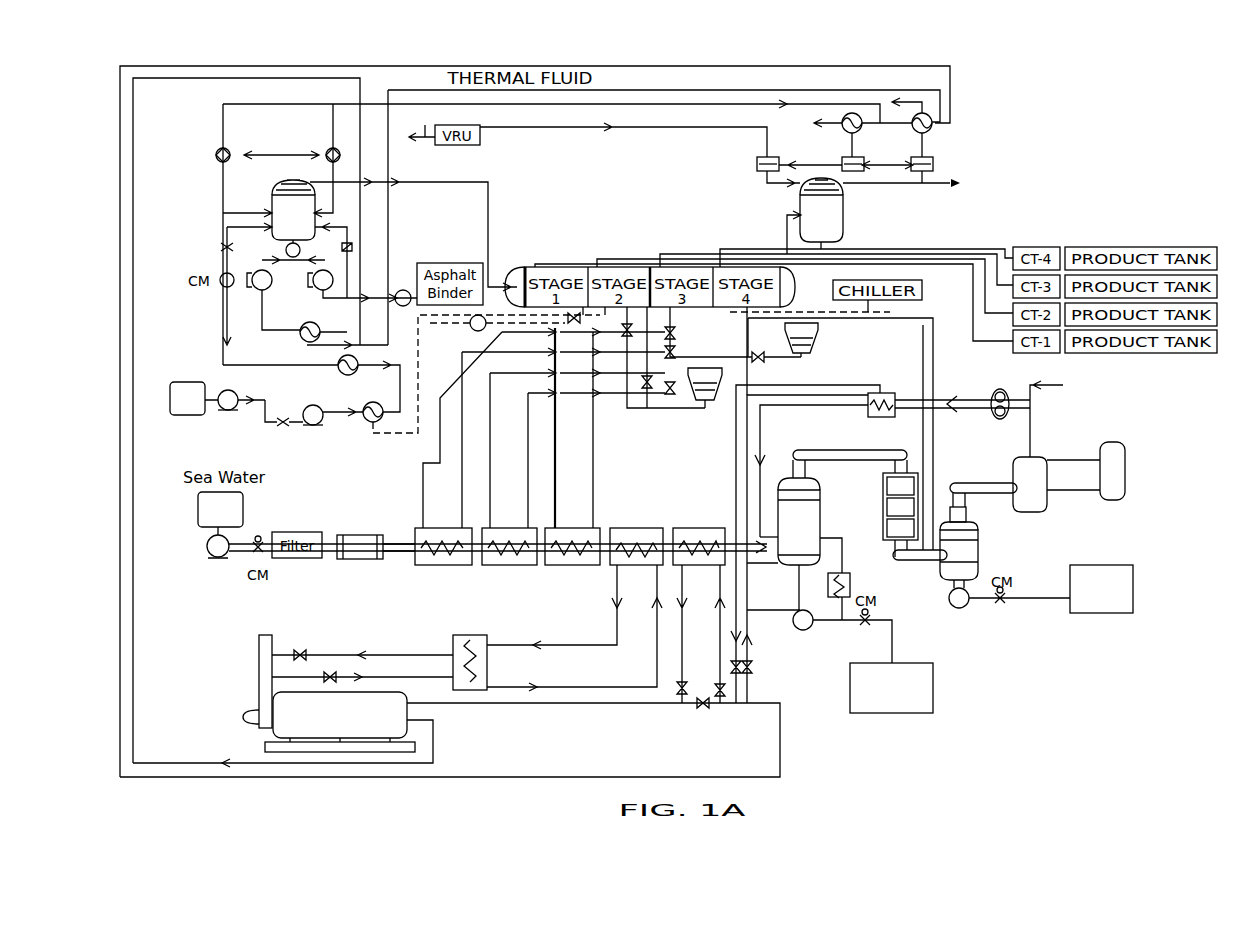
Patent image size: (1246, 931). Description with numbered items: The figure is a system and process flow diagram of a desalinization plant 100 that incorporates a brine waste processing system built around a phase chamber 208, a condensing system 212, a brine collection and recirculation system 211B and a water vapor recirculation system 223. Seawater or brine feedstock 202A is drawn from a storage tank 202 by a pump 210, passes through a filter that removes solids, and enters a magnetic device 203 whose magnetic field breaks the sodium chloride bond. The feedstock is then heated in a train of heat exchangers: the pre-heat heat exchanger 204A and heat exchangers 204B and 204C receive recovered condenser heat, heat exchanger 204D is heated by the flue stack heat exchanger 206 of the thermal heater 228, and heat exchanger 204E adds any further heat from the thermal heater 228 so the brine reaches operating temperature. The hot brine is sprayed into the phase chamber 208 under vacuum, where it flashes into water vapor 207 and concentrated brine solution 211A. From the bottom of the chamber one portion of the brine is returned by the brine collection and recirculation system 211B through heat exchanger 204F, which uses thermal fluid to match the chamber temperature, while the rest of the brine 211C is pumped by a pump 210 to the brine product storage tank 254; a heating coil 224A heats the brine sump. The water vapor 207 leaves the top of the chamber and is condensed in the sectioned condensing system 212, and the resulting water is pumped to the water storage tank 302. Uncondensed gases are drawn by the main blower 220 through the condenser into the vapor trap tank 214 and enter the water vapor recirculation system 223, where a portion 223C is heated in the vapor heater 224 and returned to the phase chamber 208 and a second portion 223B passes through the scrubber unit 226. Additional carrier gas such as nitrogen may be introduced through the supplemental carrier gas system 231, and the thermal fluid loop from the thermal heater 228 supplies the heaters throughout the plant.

The desalinization plant 100 is at (1078, 160).
The storage tank 202 is at (197, 512).
The seawater or brine feedstock 202A is at (398, 530).
The magnetic device 203 is at (355, 562).
The pre-heat heat exchanger 204A is at (440, 568).
The heat exchanger 204B is at (507, 568).
The heat exchanger 204C is at (570, 568).
The heat exchanger 204D is at (645, 526).
The heat exchanger 204E is at (705, 526).
The heat exchanger 204F is at (862, 585).
The flue stack heat exchanger 206 is at (470, 653).
The water vapor 207 is at (870, 505).
The phase chamber 208 is at (799, 521).
The pump 210 is at (214, 560).
The brine solution 211A is at (773, 586).
The brine collection and recirculation system 211B is at (844, 567).
The brine second path 211C is at (852, 636).
The condensing system 212 is at (918, 503).
The vapor trap tank 214 is at (1033, 515).
The main blower 220 is at (996, 417).
The water vapor recirculation system 223 is at (1050, 430).
The second portion of uncondensed gases 223B is at (1073, 475).
The portion of uncondensed gases 223C is at (805, 544).
The vapor heater 224 is at (884, 417).
The heating coil 224A is at (773, 562).
The scrubber unit 226 is at (1113, 484).
The thermal heater 228 is at (340, 722).
The supplemental carrier gas system 231 is at (1066, 385).
The brine product storage tank 254 is at (891, 688).
The water storage tank 302 is at (1101, 589).